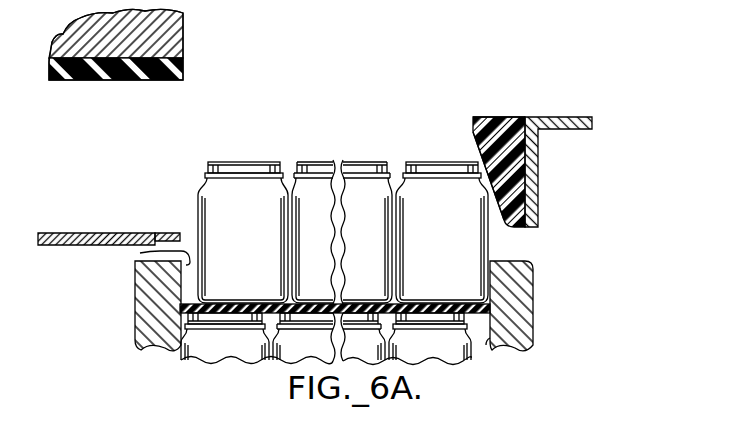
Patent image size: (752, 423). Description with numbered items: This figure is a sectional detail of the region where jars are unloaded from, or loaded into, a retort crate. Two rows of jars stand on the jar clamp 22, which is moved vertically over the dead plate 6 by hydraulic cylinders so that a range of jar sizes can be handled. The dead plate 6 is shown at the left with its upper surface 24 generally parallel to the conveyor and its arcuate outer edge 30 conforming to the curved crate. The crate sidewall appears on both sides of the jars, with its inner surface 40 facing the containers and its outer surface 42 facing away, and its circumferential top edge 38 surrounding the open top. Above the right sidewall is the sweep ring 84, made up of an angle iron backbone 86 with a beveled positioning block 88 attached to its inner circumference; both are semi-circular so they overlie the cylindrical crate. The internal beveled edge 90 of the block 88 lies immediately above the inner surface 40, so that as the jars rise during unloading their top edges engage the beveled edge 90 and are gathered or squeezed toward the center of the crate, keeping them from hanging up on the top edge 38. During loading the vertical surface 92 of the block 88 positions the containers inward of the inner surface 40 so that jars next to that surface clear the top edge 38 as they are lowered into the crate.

The dead plate 6 is at (77, 213).
The jar clamp 22 is at (185, 22).
The upper surface 24 is at (148, 232).
The arcuate outer edge 30 is at (182, 212).
The circumferential top edge 38 is at (523, 261).
The inner surface 40 is at (140, 253).
The outer surface 42 is at (135, 308).
The sweep ring 84 is at (575, 68).
The angle iron backbone 86 is at (538, 197).
The beveled positioning block 88 is at (493, 118).
The internal beveled edge 90 is at (494, 191).
The vertical surface 92 is at (473, 121).